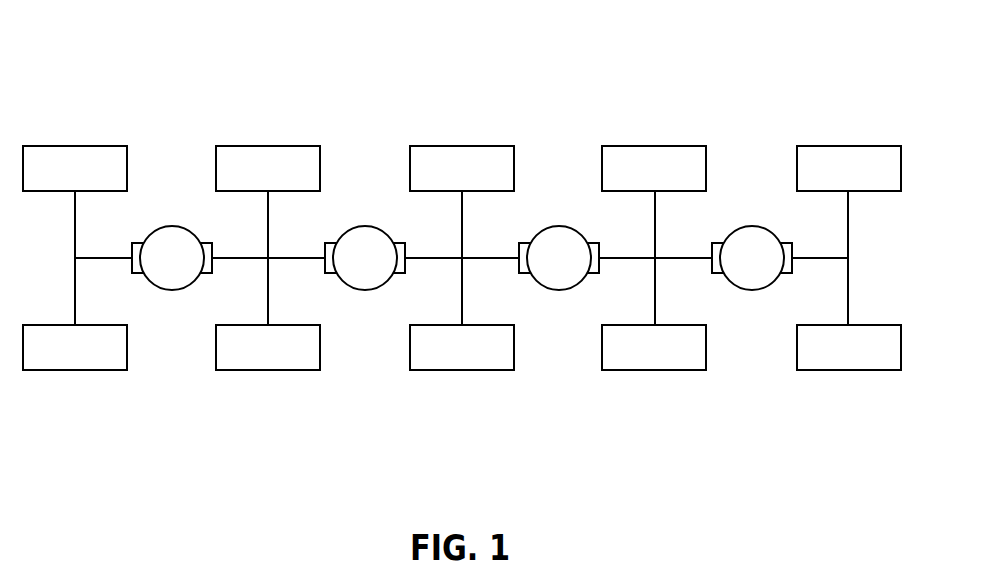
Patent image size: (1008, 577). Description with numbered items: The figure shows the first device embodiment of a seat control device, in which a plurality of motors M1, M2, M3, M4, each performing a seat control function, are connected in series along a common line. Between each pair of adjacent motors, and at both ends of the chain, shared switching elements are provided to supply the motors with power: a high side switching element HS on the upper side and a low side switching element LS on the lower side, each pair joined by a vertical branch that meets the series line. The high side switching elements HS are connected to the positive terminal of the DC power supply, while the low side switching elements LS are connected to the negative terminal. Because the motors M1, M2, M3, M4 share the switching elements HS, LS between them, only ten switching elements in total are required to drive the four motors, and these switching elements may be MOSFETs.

The high side switching element HS is at (61, 145).
The low side switching element LS is at (61, 371).
The motor M1 is at (172, 258).
The motor M2 is at (365, 258).
The motor M3 is at (559, 258).
The motor M4 is at (752, 258).